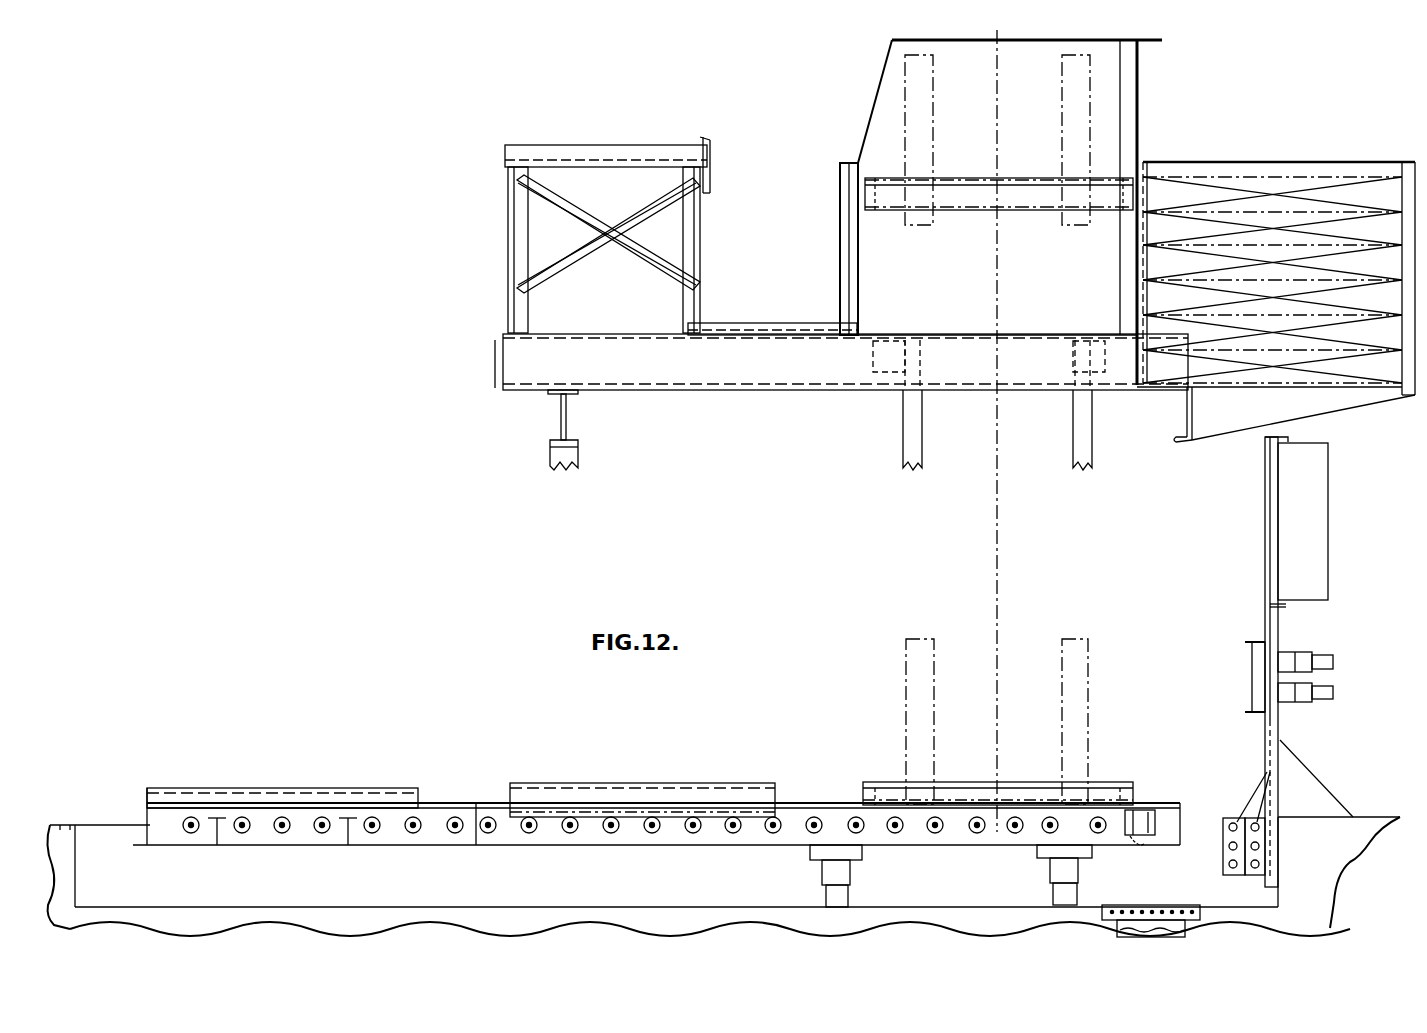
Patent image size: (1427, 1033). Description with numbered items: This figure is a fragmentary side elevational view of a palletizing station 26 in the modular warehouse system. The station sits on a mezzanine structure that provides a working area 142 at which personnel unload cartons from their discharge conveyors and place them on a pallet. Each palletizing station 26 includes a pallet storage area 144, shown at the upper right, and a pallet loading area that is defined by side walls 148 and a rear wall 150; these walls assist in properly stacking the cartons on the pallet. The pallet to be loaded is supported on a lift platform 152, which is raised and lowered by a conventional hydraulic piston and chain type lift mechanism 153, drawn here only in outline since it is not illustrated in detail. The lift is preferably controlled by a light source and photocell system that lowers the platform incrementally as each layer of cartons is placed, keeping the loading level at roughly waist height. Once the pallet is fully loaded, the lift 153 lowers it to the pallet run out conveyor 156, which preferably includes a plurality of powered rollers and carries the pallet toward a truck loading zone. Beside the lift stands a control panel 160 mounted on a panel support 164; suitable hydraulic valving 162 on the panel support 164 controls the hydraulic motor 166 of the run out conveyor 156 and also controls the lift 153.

The palletizing station 26 is at (655, 146).
The working area 142 is at (782, 300).
The pallet storage area 144 is at (1108, 178).
The side walls 148 is at (985, 127).
The rear wall 150 is at (1142, 90).
The lift platform 152 is at (966, 780).
The lift mechanism 153 is at (1090, 636).
The pallet run out conveyor 156 is at (828, 804).
The control panel 160 is at (1329, 514).
The hydraulic valving 162 is at (1335, 690).
The panel support 164 is at (1265, 624).
The hydraulic motor 166 is at (1148, 812).